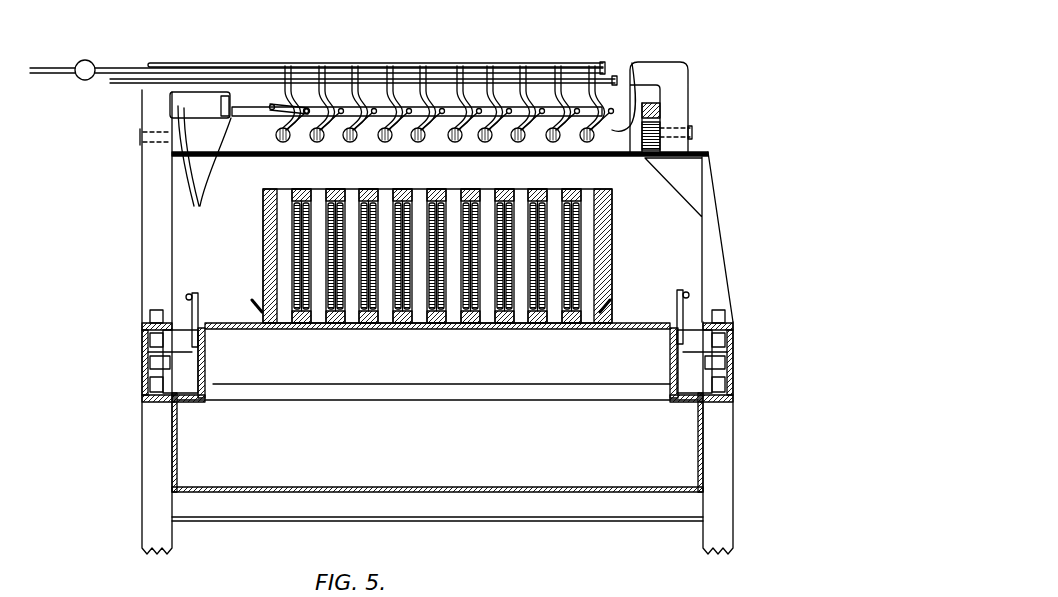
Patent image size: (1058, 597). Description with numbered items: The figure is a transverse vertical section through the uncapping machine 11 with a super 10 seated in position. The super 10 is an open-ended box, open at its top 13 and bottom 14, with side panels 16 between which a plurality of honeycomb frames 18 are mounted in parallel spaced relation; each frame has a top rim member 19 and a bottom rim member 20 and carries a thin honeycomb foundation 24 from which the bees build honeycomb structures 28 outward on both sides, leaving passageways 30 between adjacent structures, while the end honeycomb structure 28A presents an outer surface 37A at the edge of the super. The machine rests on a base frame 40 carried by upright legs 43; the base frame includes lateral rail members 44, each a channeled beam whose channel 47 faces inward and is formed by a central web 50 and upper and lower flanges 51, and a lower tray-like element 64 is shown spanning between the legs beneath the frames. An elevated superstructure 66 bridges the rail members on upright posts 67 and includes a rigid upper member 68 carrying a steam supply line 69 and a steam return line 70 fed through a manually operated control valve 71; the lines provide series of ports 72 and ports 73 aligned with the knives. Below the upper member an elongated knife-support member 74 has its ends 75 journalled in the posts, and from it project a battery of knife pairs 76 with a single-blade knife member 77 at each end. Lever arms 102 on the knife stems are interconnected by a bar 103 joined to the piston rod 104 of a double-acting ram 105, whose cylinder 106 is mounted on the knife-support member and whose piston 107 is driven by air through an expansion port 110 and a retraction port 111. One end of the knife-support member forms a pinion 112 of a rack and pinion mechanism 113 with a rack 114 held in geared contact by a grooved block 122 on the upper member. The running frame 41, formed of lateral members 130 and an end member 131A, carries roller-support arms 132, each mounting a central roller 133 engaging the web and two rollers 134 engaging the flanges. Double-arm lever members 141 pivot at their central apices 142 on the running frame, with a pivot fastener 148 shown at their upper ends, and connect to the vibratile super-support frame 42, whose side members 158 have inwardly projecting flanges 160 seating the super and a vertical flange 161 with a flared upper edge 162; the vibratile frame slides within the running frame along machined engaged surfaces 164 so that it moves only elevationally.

The super 10 is at (262, 255).
The uncapping machine 11 is at (640, 52).
The top 13 is at (598, 189).
The bottom 14 is at (586, 329).
The side panels 16 is at (262, 218).
The honeycomb frames 18 is at (428, 330).
The top rim member 19 is at (470, 190).
The bottom rim member 20 is at (538, 330).
The honeycomb foundation 24 is at (290, 190).
The honeycomb structures 28 is at (357, 195).
The end honeycomb structure 28A is at (293, 238).
The passageways 30 is at (347, 330).
The outer surface 37A is at (303, 265).
The base frame 40 is at (742, 490).
The running frame 41 is at (672, 402).
The vibratile super-support frame 42 is at (210, 382).
The legs 43 is at (150, 533).
The rail members 44 is at (148, 396).
The channel 47 is at (152, 401).
The central web 50 is at (147, 353).
The flanges 51 is at (150, 323).
The tray 64 is at (460, 487).
The superstructure 66 is at (695, 100).
The posts 67 is at (150, 178).
The upper member 68 is at (650, 68).
The steam supply line 69 is at (60, 68).
The steam return line 70 is at (124, 84).
The control valve 71 is at (88, 60).
The supply-line ports 72 is at (322, 70).
The return-line ports 73 is at (460, 72).
The knife-support member 74 is at (248, 150).
The ends of knife-support member 75 is at (170, 143).
The knife pairs 76 is at (516, 148).
The single-blade knife member 77 is at (632, 63).
The lever arms 102 is at (530, 106).
The bar 103 is at (395, 106).
The piston rod 104 is at (252, 106).
The double-acting ram 105 is at (190, 92).
The cylinder 106 is at (212, 100).
The piston 107 is at (230, 98).
The expansion port 110 is at (178, 106).
The retraction port 111 is at (240, 112).
The pinion 112 is at (662, 130).
The rack and pinion mechanism 113 is at (665, 145).
The rack 114 is at (660, 110).
The grooved block 122 is at (656, 90).
The lateral members 130 is at (205, 402).
The end member 131A is at (398, 392).
The roller-support arms 132 is at (206, 370).
The central roller 133 is at (150, 362).
The rollers 134 is at (150, 340).
The double-arm lever members 141 is at (192, 312).
The central apices 142 is at (152, 345).
The bolt 148 is at (187, 295).
The side members 158 is at (236, 329).
The flanges 160 is at (262, 331).
The vertical flange 161 is at (256, 320).
The flared upper edge 162 is at (252, 300).
The engaged surfaces 164 is at (670, 386).